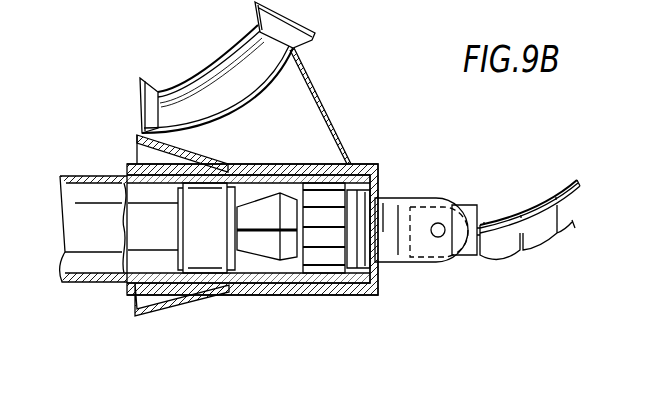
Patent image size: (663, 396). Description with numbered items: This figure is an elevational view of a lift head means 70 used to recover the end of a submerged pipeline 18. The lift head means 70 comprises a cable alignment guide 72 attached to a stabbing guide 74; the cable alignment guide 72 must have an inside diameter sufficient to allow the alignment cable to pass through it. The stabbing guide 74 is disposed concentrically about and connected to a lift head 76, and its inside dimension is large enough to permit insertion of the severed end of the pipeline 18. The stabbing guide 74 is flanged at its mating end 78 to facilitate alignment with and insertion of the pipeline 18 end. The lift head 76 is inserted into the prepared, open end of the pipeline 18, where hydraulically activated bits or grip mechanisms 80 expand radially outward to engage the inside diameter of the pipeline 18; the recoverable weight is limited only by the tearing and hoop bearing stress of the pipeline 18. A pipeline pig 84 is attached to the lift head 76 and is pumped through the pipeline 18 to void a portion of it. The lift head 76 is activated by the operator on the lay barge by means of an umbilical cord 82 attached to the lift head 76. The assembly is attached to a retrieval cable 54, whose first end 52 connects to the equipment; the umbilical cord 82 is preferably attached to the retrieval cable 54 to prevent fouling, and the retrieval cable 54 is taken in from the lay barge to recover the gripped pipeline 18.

The pipeline 18 is at (72, 283).
The first end of retrieval cable 52 is at (502, 224).
The retrieval cable 54 is at (548, 203).
The lift head means 70 is at (133, 147).
The cable alignment guide 72 is at (296, 53).
The stabbing guide 74 is at (230, 294).
The lift head 76 is at (408, 262).
The mating end 78 is at (135, 315).
The grip mechanisms 80 is at (268, 250).
The umbilical cord 82 is at (508, 257).
The pipeline pig 84 is at (205, 277).